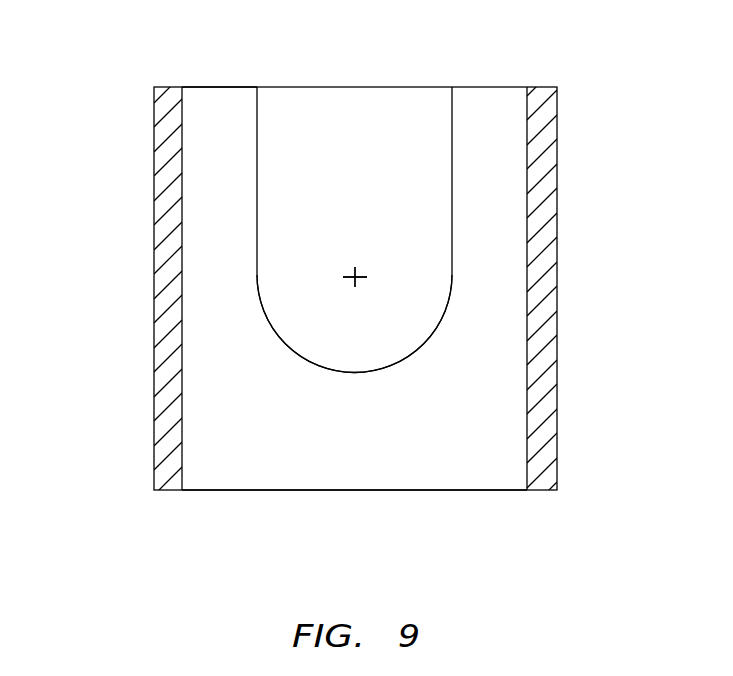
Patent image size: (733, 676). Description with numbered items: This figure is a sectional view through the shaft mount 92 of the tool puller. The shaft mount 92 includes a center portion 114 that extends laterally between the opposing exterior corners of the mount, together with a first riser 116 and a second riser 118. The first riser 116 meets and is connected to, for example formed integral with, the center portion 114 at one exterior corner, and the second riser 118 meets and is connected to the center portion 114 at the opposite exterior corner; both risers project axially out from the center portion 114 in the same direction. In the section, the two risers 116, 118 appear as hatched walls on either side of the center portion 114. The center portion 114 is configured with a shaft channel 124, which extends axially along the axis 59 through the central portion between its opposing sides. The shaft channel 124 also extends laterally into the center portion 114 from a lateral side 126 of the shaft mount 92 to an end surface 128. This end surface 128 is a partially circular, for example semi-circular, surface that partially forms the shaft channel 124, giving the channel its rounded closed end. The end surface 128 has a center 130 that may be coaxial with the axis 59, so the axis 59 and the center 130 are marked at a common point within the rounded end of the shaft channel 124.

The shaft mount 92 is at (581, 113).
The center portion 114 is at (261, 500).
The first riser 116 is at (146, 289).
The second riser 118 is at (564, 282).
The shaft channel 124 is at (379, 108).
The lateral side 126 is at (218, 87).
The end surface 128 is at (310, 362).
The axis 59 is at (358, 272).
The center 130 is at (355, 277).